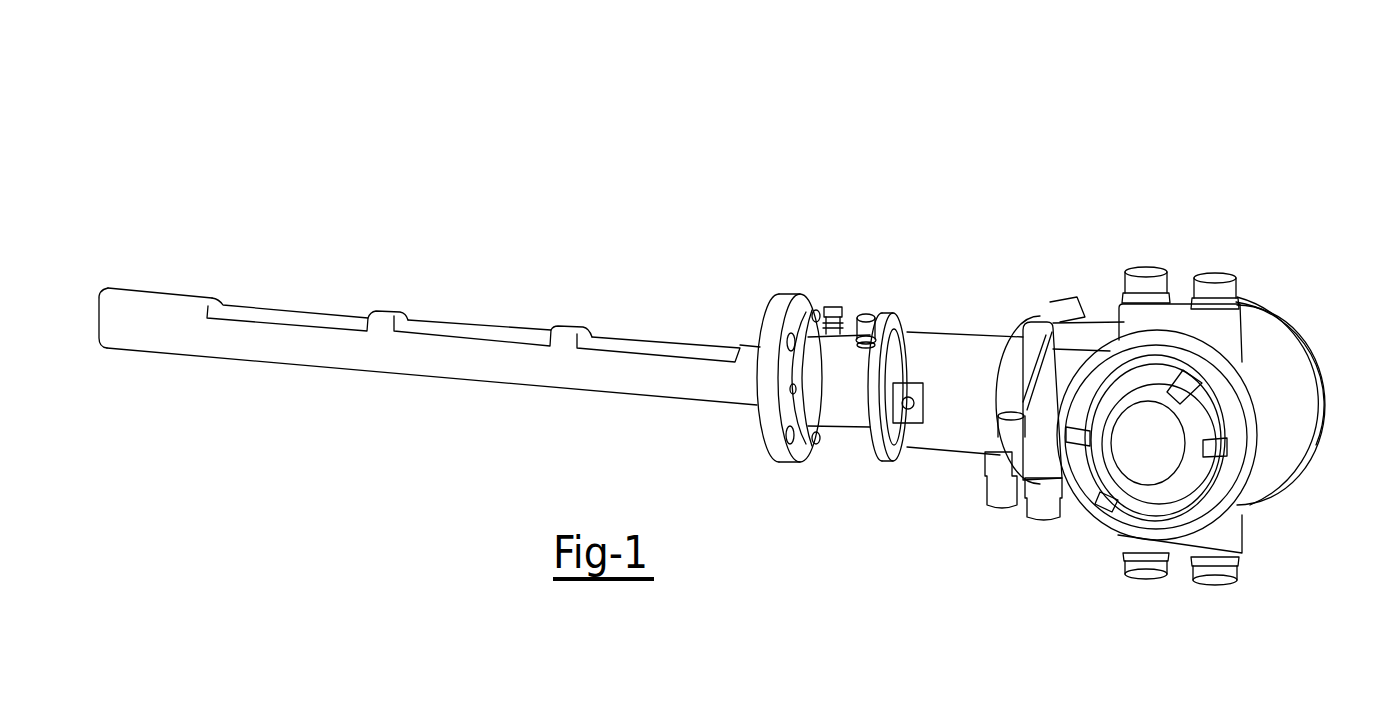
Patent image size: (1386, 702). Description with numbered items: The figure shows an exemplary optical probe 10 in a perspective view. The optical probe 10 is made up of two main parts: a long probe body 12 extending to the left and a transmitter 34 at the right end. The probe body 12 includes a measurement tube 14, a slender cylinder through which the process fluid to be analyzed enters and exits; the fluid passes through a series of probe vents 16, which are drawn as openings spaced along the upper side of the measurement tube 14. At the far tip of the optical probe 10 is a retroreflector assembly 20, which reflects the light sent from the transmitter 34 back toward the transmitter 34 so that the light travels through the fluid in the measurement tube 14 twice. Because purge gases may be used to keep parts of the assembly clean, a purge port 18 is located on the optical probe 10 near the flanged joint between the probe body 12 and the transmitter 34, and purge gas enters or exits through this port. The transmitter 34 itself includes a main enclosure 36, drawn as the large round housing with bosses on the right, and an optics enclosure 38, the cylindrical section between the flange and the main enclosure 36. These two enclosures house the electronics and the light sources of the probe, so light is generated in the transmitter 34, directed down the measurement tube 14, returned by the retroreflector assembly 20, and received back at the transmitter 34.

The optical probe 10 is at (348, 114).
The probe body 12 is at (803, 226).
The measurement tube 14 is at (375, 352).
The probe vents 16 is at (280, 315).
The purge port 18 is at (835, 308).
The retroreflector assembly 20 is at (152, 310).
The transmitter 34 is at (1315, 212).
The main enclosure 36 is at (1268, 417).
The optics enclosure 38 is at (953, 360).